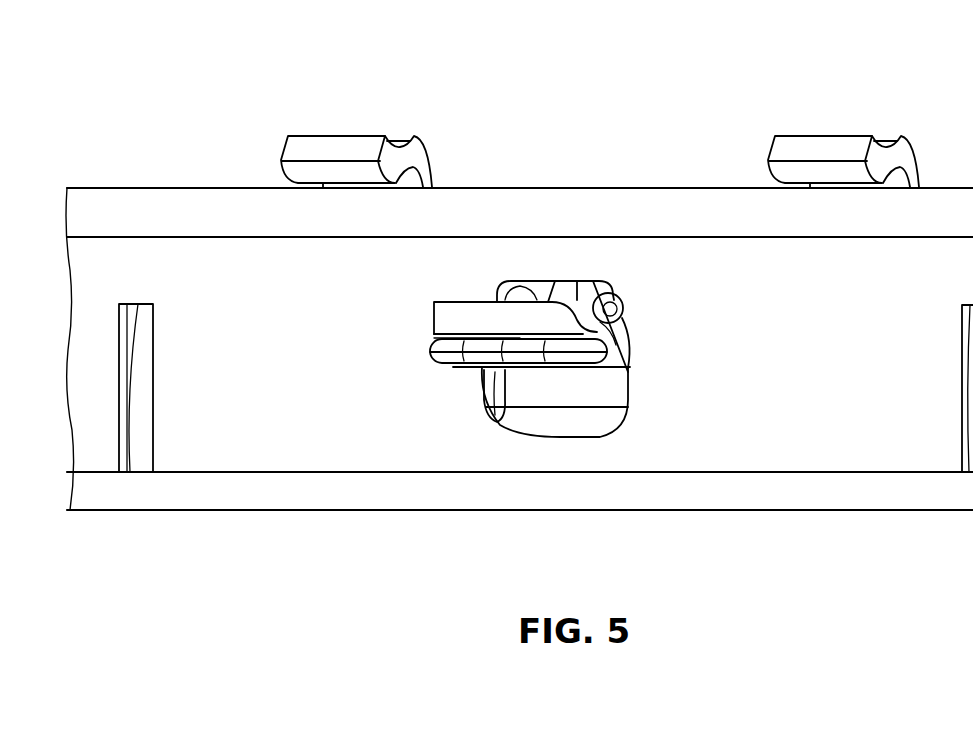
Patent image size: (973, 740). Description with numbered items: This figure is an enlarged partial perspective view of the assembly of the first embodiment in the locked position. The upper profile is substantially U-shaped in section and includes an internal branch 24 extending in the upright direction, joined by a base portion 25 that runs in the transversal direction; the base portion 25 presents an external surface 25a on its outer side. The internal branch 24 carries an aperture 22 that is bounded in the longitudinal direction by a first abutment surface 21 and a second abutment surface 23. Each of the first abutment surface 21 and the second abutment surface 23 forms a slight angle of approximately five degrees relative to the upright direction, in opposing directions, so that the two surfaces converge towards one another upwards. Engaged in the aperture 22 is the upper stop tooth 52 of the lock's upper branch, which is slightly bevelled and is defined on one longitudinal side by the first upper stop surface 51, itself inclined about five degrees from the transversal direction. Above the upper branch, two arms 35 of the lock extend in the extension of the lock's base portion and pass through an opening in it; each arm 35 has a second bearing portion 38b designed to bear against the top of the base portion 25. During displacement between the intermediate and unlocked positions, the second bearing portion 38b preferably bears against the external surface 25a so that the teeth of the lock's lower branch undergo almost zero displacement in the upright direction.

The first abutment surface 21 is at (633, 362).
The aperture 22 is at (497, 405).
The second abutment surface 23 is at (482, 373).
The internal branch 24 is at (280, 400).
The base portion 25 is at (222, 185).
The external surface 25a is at (698, 188).
The arms 35 is at (428, 143).
The second bearing portion 38b is at (398, 188).
The first upper stop surface 51 is at (597, 292).
The upper stop tooth 52 is at (523, 313).